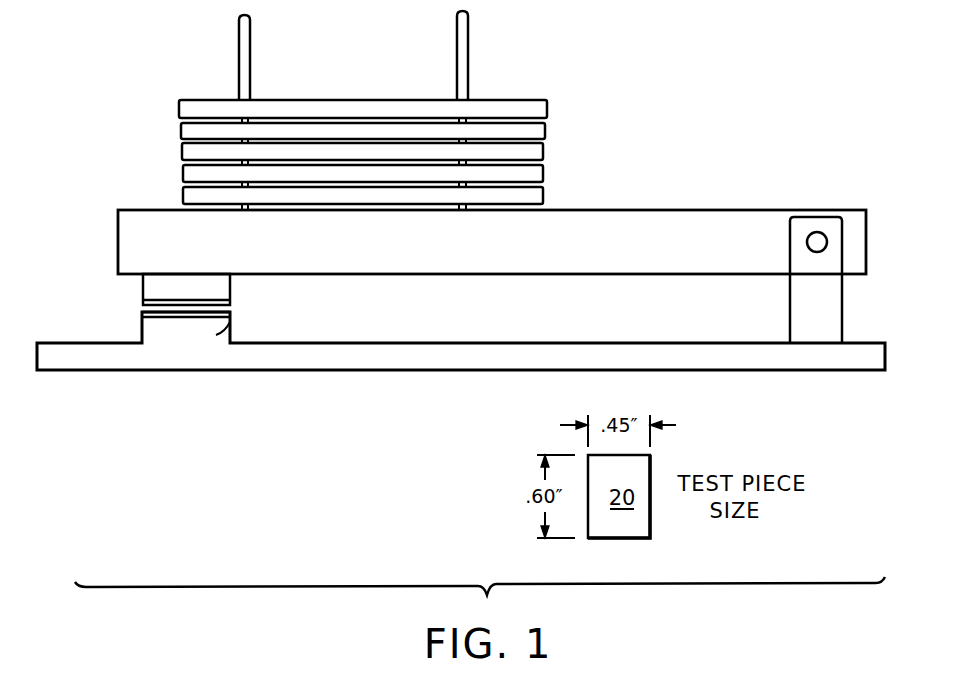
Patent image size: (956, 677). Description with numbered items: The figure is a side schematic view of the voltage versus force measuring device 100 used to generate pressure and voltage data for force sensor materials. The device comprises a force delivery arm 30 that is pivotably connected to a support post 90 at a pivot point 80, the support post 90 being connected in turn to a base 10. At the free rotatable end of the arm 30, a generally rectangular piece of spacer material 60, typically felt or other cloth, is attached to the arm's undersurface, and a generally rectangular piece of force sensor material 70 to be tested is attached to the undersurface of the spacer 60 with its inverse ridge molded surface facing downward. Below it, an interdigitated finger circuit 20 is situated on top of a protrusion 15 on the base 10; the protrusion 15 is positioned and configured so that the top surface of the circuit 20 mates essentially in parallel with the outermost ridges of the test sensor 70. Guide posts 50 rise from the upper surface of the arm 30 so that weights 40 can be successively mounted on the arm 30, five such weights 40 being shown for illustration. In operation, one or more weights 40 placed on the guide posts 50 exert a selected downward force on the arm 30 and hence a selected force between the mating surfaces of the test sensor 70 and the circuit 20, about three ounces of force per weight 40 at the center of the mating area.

The base 10 is at (67, 353).
The protrusion 15 is at (232, 334).
The interdigitated finger circuit 20 is at (143, 315).
The force delivery arm 30 is at (124, 233).
The weights 40 is at (153, 151).
The guide posts 50 is at (246, 58).
The spacer material 60 is at (232, 288).
The force sensor material 70 is at (230, 307).
The pivot point 80 is at (816, 243).
The support post 90 is at (801, 307).
The voltage versus force measuring device 100 is at (673, 135).